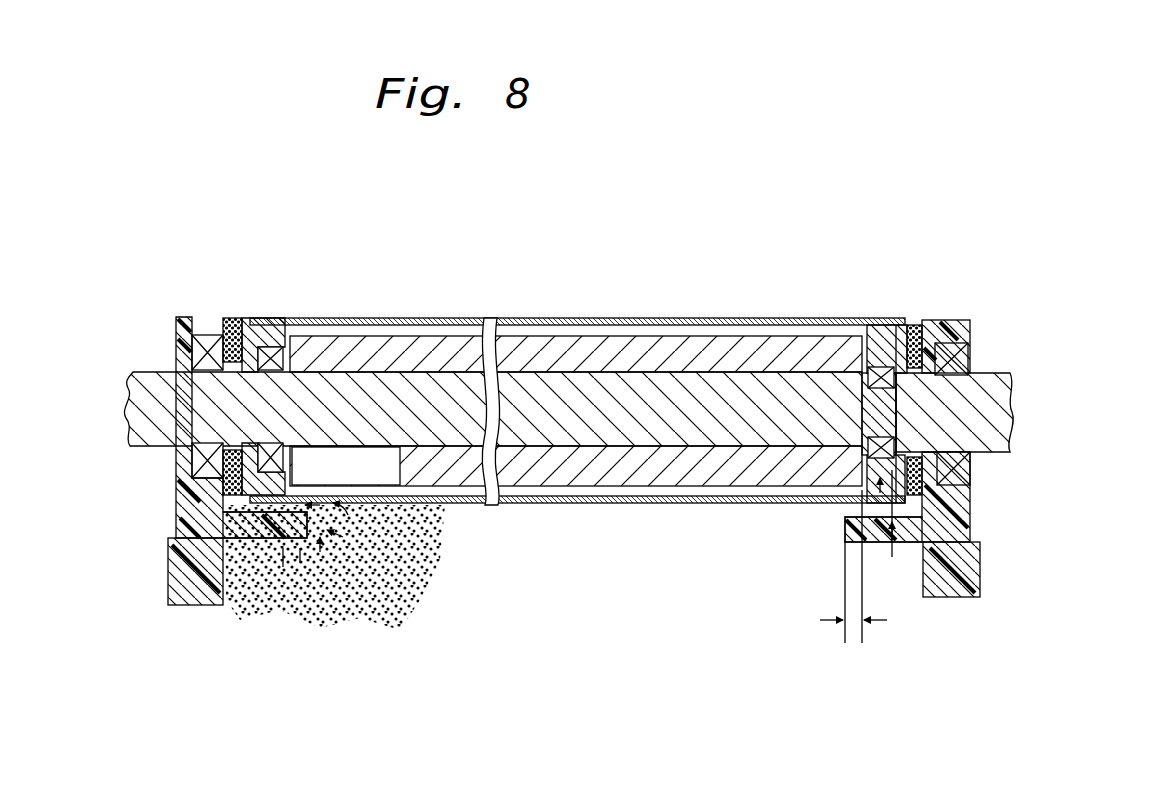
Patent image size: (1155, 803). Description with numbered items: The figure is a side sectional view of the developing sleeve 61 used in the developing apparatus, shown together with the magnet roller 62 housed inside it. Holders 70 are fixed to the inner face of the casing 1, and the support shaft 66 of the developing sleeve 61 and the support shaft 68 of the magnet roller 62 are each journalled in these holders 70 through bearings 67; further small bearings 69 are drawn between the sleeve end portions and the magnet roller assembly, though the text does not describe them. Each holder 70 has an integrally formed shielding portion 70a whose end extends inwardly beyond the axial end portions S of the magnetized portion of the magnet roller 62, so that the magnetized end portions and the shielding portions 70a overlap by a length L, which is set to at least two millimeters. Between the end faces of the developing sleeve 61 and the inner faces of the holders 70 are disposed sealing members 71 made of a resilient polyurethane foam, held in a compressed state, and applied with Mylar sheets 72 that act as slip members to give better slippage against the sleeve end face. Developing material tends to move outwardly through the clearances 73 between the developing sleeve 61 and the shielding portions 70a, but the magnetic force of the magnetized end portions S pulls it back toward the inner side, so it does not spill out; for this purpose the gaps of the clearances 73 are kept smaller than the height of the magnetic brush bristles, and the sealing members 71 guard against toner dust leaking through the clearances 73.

The casing 1 is at (162, 577).
The developing sleeve 61 is at (697, 322).
The magnet roller 62 is at (620, 337).
The support shaft 66 is at (1013, 373).
The bearings 67 is at (210, 343).
The support shaft 68 is at (145, 372).
The bearing 69 is at (278, 358).
The holders 70 is at (180, 317).
The shielding portions 70a is at (263, 537).
The sealing members 71 is at (233, 327).
The sheets 72 is at (253, 330).
The clearances 73 is at (258, 508).
The axial end portions S is at (292, 330).
The overlapping length L is at (852, 623).